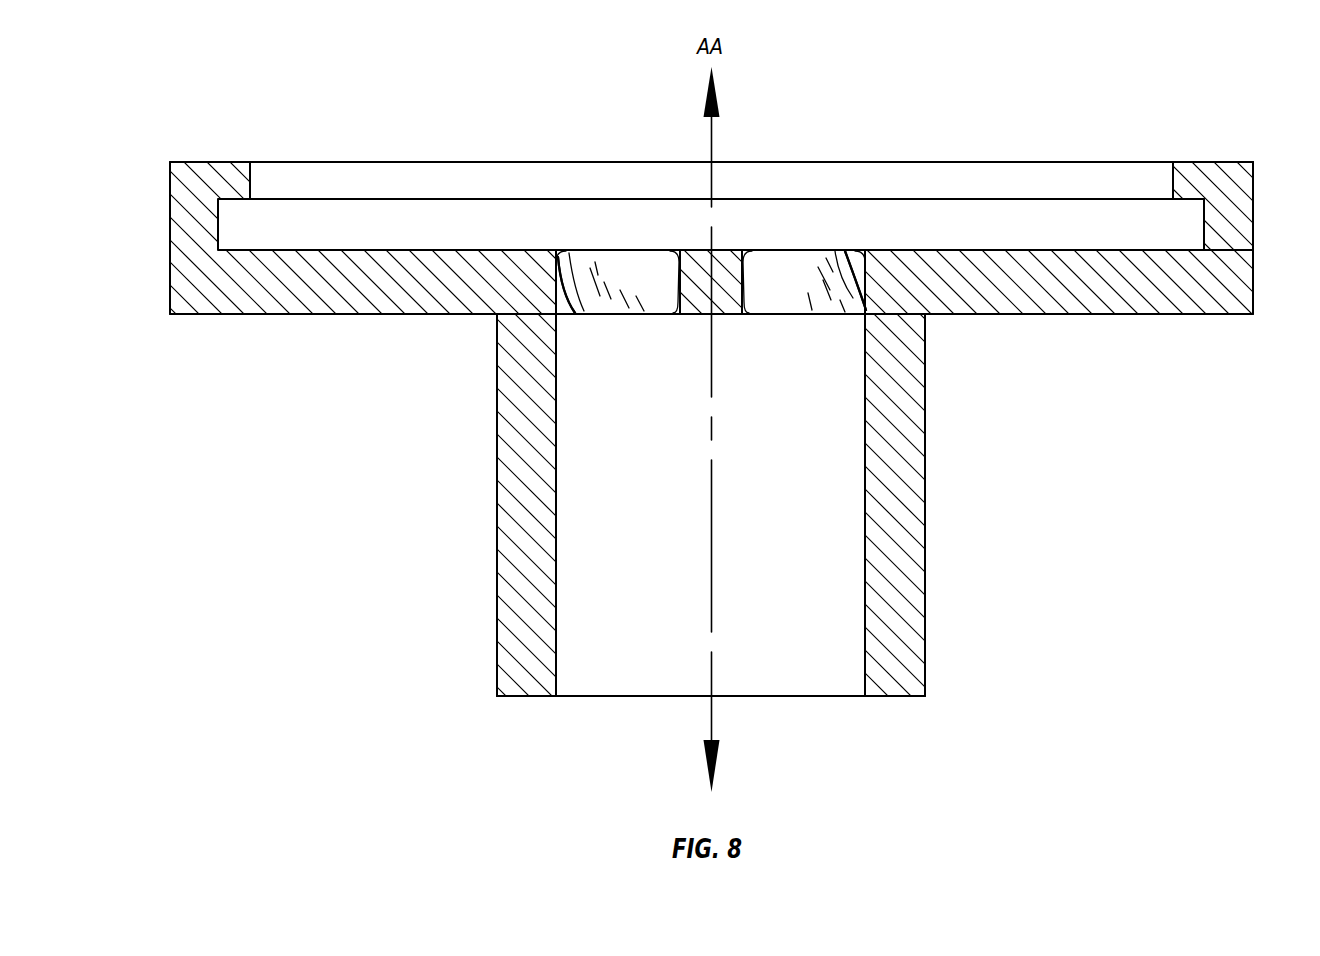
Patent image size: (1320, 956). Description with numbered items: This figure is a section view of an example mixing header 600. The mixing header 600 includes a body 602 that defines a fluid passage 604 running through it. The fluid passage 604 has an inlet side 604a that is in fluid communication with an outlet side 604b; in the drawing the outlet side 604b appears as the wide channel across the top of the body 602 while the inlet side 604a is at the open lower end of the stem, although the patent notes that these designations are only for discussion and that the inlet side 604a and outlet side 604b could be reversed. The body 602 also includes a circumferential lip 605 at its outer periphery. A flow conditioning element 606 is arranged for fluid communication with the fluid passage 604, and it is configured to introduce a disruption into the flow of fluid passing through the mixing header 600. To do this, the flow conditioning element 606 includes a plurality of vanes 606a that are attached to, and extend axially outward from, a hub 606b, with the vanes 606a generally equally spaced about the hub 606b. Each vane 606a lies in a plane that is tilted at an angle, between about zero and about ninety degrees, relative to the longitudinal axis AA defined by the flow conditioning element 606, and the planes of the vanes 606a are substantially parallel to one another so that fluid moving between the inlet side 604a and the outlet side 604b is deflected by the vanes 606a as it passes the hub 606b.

The mixing header 600 is at (315, 36).
The body 602 is at (218, 146).
The fluid passage 604 is at (613, 641).
The inlet side 604a is at (820, 696).
The outlet side 604b is at (799, 226).
The circumferential lip 605 is at (1209, 160).
The flow conditioning element 606 is at (623, 345).
The vanes 606a is at (607, 306).
The hub 606b is at (725, 314).